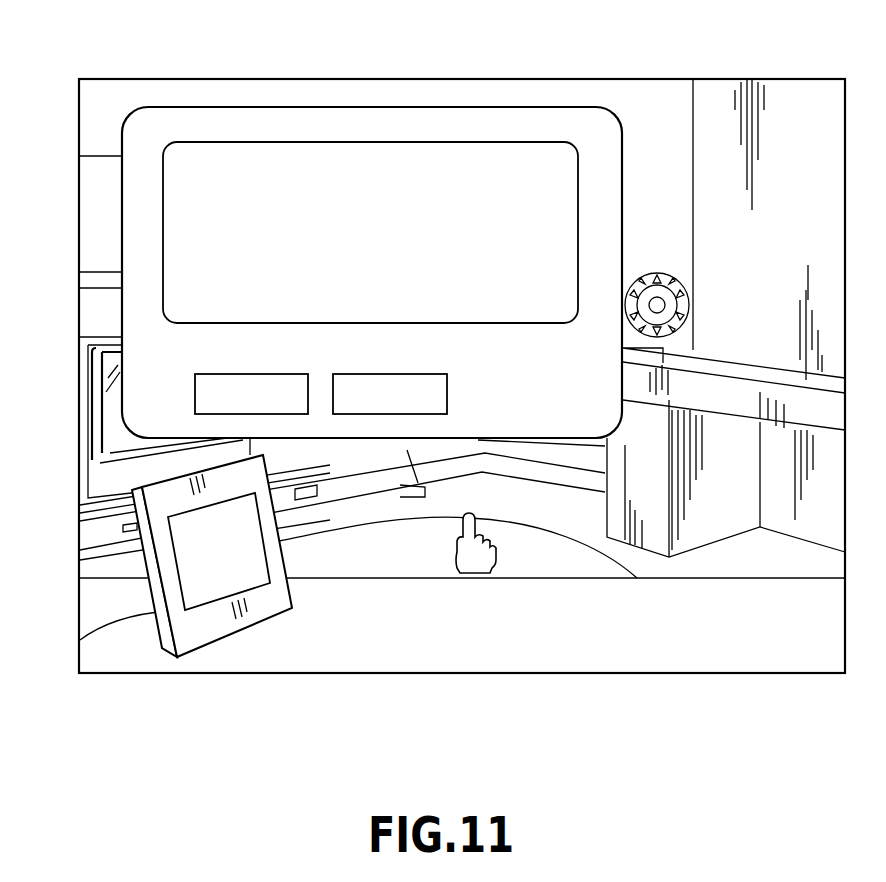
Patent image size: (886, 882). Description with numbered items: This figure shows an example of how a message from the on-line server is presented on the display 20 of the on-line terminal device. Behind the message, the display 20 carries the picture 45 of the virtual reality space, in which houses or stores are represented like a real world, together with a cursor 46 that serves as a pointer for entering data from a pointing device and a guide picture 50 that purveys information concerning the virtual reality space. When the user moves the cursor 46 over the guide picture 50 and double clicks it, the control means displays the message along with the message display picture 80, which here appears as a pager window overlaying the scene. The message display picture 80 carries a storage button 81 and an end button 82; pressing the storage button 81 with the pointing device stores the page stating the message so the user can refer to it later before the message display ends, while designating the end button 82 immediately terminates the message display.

The display 20 is at (508, 79).
The picture of a virtual reality space 45 is at (325, 228).
The message display picture 80 is at (130, 228).
The storage button 81 is at (195, 380).
The end button 82 is at (447, 388).
The cursor 46 is at (500, 553).
The guide picture 50 is at (80, 640).